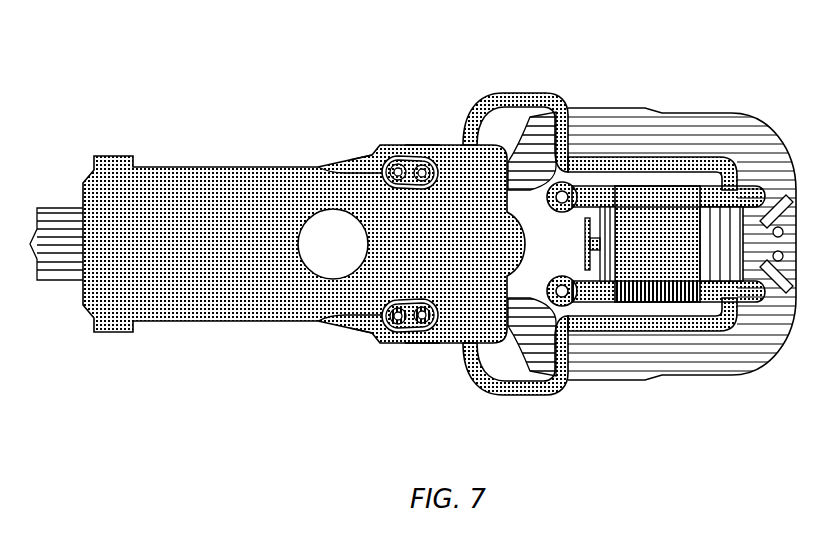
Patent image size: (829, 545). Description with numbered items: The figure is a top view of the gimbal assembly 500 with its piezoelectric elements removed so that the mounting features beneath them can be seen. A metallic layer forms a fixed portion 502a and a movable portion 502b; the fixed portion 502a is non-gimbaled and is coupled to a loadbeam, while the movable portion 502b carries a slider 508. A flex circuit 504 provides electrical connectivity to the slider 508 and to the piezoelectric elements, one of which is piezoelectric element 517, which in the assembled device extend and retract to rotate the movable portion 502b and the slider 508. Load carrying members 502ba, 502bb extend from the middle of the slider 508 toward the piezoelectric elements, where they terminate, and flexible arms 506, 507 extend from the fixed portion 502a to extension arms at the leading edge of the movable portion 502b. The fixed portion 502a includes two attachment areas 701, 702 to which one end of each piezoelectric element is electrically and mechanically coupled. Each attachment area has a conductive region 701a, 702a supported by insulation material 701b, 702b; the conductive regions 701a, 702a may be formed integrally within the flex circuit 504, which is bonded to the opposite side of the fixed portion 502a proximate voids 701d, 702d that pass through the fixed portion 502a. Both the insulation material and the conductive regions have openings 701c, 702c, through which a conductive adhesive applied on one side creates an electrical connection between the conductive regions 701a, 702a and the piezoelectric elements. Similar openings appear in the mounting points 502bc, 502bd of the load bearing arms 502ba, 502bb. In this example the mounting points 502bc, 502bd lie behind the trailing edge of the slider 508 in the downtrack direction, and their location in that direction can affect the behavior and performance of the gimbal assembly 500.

The gimbal assembly 500 is at (250, 420).
The fixed portion 502a is at (200, 314).
The movable portion 502b is at (683, 293).
The load carrying member 502ba is at (640, 186).
The load carrying member 502bb is at (625, 300).
The mounting point 502bc is at (563, 182).
The mounting point 502bd is at (570, 306).
The flex circuit 504 is at (617, 135).
The flexible arm 506 is at (530, 395).
The flexible arm 507 is at (520, 93).
The slider 508 is at (752, 145).
The piezoelectric element 517 is at (497, 145).
The attachment area 701 is at (368, 147).
The conductive region 701a is at (418, 145).
The insulation material 701b is at (373, 150).
The opening 701c is at (405, 190).
The void 701d is at (336, 172).
The attachment area 702 is at (370, 347).
The conductive region 702a is at (430, 345).
The insulation material 702b is at (370, 338).
The opening 702c is at (403, 300).
The void 702d is at (322, 322).